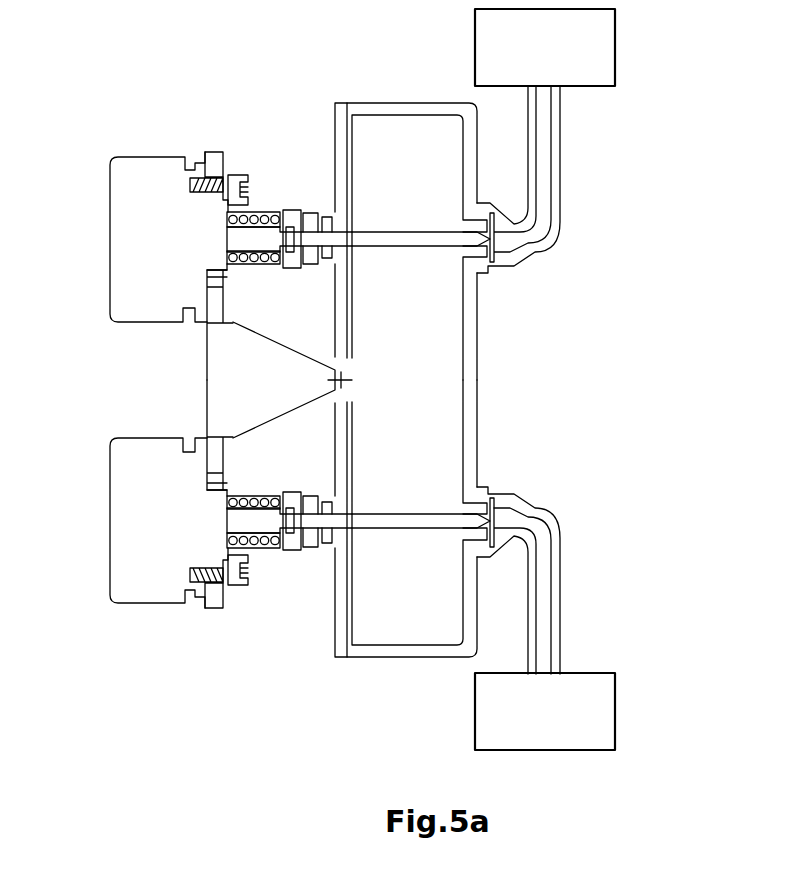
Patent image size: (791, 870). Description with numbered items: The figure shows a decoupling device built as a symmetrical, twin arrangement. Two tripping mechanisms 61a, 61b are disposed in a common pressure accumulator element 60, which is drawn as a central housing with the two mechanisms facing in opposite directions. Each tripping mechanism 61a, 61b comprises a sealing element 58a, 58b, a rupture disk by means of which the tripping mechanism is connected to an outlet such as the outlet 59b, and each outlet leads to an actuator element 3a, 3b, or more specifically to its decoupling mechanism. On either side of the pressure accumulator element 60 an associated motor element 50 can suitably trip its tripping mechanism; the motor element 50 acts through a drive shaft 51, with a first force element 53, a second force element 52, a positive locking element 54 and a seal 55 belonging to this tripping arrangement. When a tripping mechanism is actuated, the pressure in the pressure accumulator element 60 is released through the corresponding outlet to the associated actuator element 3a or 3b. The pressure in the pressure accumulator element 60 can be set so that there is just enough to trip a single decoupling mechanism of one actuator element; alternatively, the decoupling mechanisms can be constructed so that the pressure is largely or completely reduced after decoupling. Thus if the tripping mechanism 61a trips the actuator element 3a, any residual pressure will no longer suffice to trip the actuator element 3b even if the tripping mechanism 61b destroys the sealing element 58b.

The actuator element 3a is at (592, 50).
The actuator element 3b is at (592, 708).
The motor element 50 is at (135, 188).
The drive shaft 51 is at (228, 241).
The second force element 52 is at (252, 215).
The first force element 53 is at (264, 264).
The positive locking element 54 is at (285, 213).
The seal 55 is at (337, 212).
The sealing element 58a is at (513, 235).
The sealing element 58b is at (493, 528).
The outlet 59b is at (533, 527).
The pressure accumulator element 60 is at (385, 108).
The tripping mechanism 61a is at (430, 242).
The tripping mechanism 61b is at (413, 529).